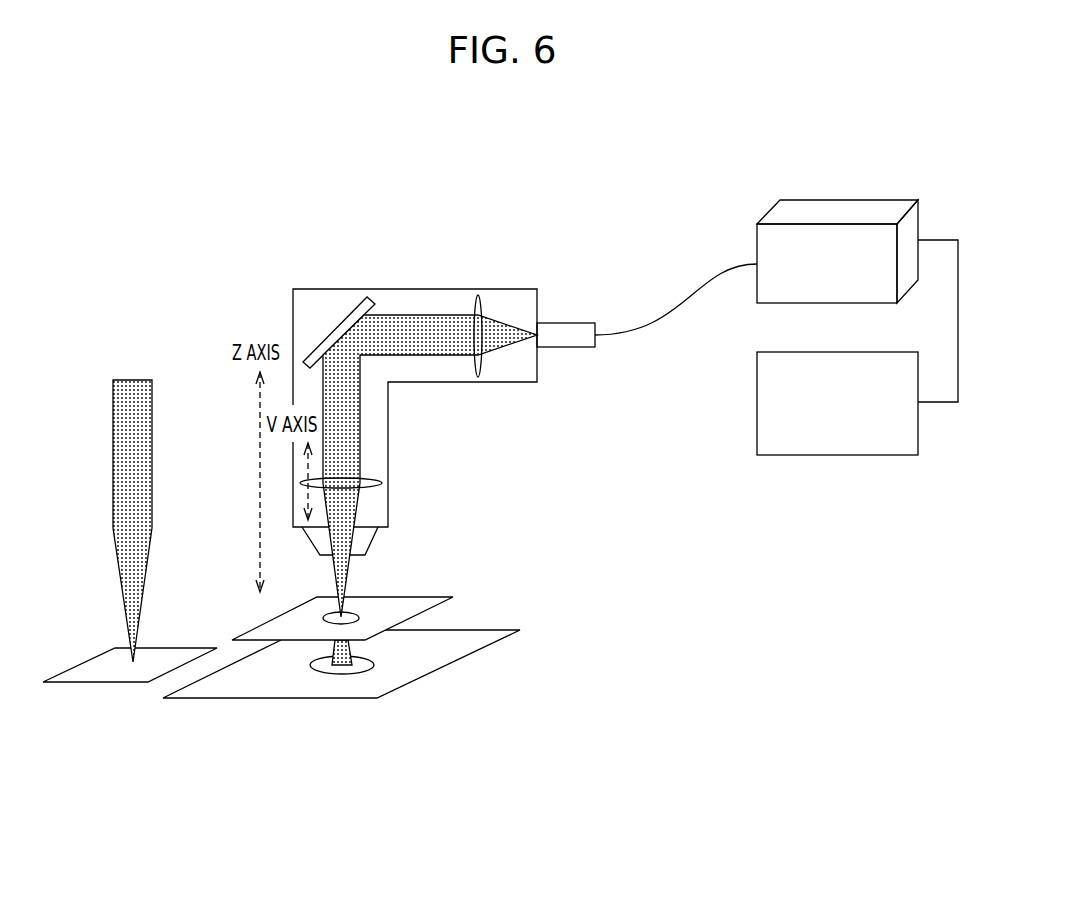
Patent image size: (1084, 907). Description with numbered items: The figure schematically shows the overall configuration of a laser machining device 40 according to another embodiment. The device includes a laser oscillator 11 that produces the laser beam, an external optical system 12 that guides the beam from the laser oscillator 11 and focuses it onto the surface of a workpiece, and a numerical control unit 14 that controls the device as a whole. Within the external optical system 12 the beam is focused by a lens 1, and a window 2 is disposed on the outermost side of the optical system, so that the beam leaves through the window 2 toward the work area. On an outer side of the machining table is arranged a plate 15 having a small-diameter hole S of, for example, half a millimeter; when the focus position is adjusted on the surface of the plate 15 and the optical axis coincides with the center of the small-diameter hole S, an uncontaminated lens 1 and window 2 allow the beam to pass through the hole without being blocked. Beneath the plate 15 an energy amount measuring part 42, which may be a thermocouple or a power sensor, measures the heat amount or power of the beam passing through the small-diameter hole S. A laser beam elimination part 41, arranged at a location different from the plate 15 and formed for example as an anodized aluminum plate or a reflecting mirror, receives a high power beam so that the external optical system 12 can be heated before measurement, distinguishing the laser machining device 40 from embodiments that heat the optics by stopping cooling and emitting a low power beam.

The lens 1 is at (370, 481).
The window 2 is at (356, 558).
The laser oscillator 11 is at (872, 199).
The external optical system 12 is at (293, 307).
The numerical control unit 14 is at (790, 456).
The plate 15 is at (407, 605).
The small-diameter hole S is at (307, 609).
The laser machining device 40 is at (145, 253).
The laser beam elimination part 41 is at (91, 672).
The energy amount measuring part 42 is at (344, 674).